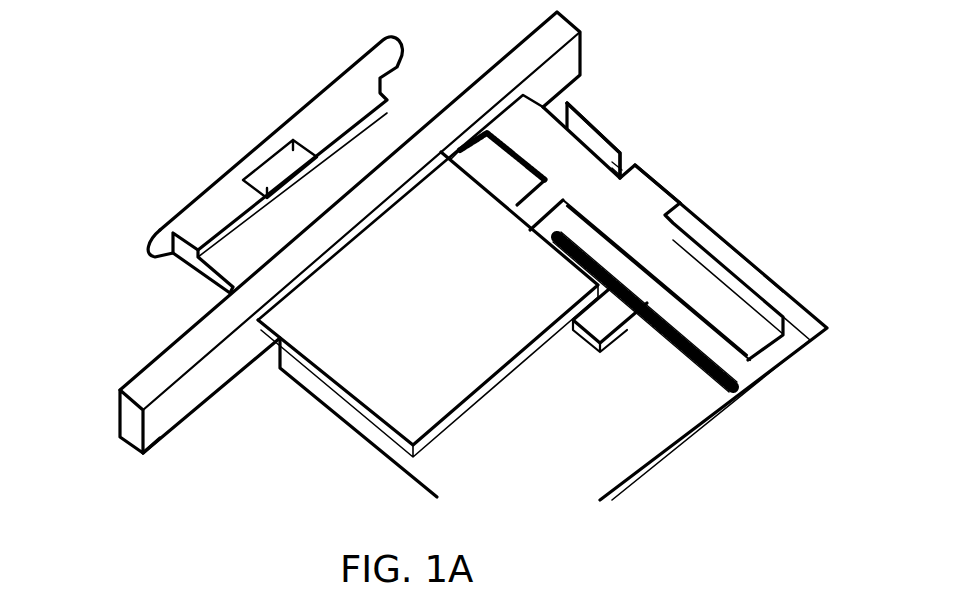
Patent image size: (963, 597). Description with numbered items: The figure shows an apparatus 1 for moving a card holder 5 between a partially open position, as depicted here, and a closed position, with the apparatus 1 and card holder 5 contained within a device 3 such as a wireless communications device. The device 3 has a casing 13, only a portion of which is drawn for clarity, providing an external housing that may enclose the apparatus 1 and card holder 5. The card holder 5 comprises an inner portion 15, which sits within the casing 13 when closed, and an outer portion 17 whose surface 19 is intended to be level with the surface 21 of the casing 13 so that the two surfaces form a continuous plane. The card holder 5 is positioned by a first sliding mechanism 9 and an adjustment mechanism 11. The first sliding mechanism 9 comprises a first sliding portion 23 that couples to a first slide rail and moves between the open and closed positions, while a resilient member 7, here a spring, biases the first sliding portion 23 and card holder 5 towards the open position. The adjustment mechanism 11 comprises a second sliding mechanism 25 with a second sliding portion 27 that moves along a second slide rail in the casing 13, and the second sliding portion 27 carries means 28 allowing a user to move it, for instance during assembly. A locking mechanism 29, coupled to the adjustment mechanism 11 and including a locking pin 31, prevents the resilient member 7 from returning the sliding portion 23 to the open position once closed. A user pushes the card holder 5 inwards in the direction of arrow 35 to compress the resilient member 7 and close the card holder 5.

The apparatus 1 is at (749, 281).
The device 3 is at (459, 279).
The card holder 5 is at (203, 280).
The resilient member 7 is at (738, 388).
The first sliding mechanism 9 is at (667, 307).
The adjustment mechanism 11 is at (773, 279).
The casing 13 is at (152, 437).
The inner portion 15 is at (381, 439).
The outer portion 17 is at (183, 210).
The surface 19 is at (217, 182).
The surface 21 is at (132, 374).
The first sliding portion 23 is at (617, 240).
The second sliding mechanism 25 is at (617, 123).
The second sliding portion 27 is at (604, 179).
The means for enabling movement 28 is at (650, 173).
The locking mechanism 29 is at (488, 135).
The locking pin 31 is at (473, 132).
The arrow 35 is at (262, 165).